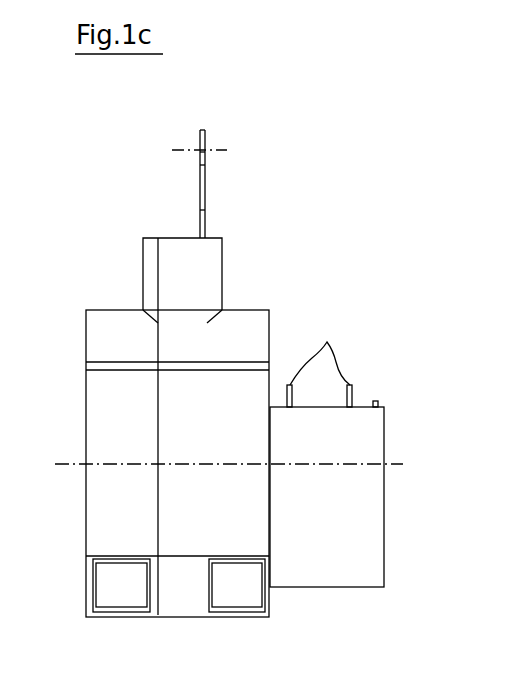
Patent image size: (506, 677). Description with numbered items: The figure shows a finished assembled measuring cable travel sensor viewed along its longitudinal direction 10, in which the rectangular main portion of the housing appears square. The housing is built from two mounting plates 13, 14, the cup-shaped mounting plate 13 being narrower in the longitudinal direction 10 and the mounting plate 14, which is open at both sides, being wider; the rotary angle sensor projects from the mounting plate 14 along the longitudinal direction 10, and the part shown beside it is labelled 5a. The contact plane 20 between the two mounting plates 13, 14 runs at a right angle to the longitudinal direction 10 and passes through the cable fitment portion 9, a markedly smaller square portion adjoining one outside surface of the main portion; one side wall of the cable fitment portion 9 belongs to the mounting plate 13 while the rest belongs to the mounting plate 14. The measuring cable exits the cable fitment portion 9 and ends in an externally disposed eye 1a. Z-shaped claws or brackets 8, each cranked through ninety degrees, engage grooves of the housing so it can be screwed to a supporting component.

The eye 1a is at (205, 192).
The cable fitment portion 9 is at (163, 257).
The longitudinal direction 10 is at (72, 465).
The mounting plate 13 is at (122, 463).
The mounting plate 14 is at (213, 463).
The contact plane 20 is at (160, 430).
The claws or brackets 8 is at (0, 587).
The module 5a is at (327, 449).